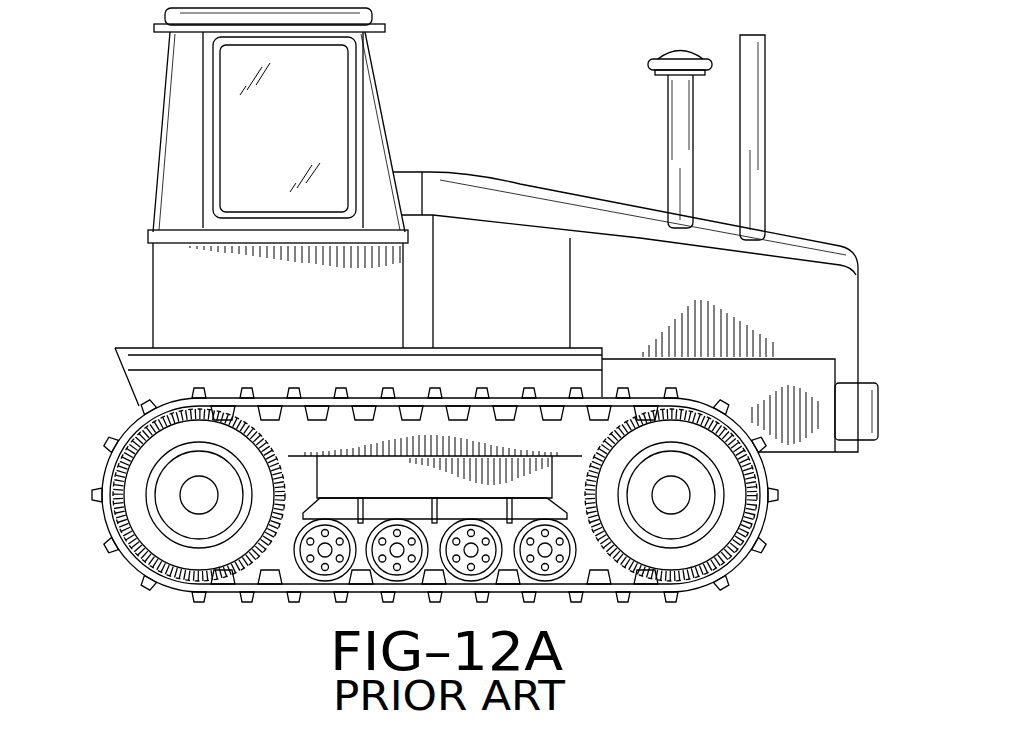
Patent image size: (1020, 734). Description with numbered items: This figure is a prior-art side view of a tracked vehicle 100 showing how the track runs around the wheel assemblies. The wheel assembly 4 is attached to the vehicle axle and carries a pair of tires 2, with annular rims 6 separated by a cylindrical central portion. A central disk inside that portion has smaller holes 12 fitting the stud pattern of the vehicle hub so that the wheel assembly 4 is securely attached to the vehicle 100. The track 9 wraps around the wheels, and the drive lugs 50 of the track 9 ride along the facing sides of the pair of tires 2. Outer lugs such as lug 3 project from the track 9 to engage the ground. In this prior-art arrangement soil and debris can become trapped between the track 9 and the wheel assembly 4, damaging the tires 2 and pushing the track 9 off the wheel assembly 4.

The vehicle 100 is at (812, 194).
The tires 2 is at (142, 556).
The track lug 3 is at (722, 590).
The wheel assembly 4 is at (180, 572).
The annular rims 6 is at (162, 477).
The track 9 is at (790, 500).
The smaller holes 12 is at (277, 497).
The drive lugs 50 is at (555, 410).